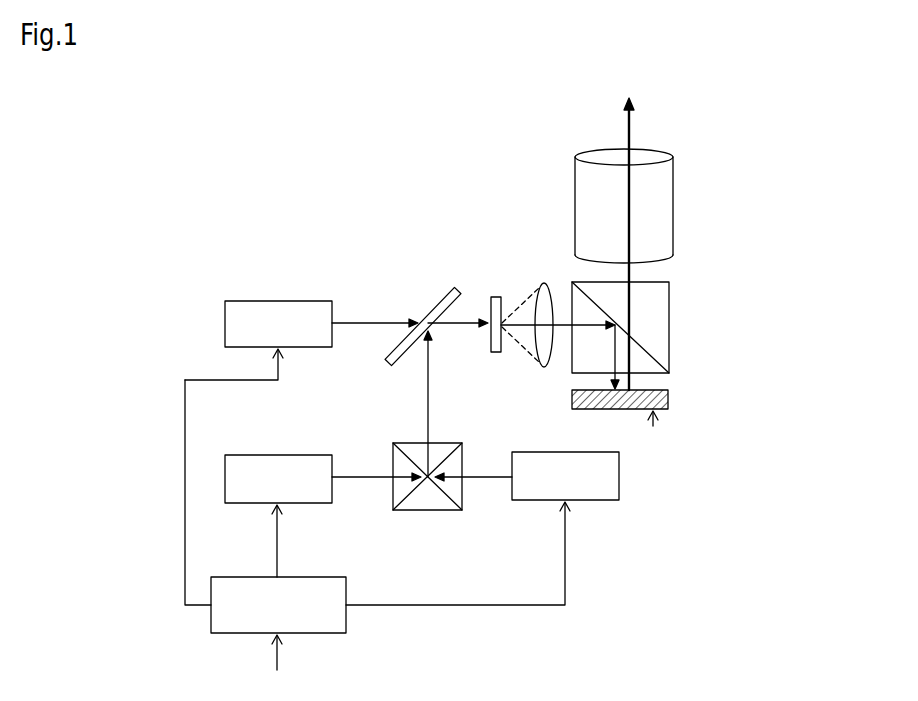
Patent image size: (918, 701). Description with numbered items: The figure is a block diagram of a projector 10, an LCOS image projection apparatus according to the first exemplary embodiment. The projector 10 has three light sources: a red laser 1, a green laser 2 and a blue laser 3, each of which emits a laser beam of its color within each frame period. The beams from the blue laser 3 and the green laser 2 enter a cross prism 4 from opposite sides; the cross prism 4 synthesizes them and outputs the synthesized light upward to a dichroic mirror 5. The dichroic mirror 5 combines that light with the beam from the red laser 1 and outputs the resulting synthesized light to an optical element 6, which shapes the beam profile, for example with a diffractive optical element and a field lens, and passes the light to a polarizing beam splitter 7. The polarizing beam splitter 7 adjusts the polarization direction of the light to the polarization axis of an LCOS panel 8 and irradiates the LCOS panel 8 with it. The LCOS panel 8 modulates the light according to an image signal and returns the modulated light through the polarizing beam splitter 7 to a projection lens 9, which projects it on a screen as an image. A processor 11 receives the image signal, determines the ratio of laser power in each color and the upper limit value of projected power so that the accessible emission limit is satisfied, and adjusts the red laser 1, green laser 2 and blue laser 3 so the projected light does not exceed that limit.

The red laser 1 is at (242, 300).
The green laser 2 is at (594, 502).
The blue laser 3 is at (306, 455).
The cross prism 4 is at (477, 426).
The dichroic mirror 5 is at (430, 307).
The optical element 6 is at (550, 268).
The polarizing beam splitter 7 is at (670, 323).
The LCOS panel 8 is at (670, 398).
The projection lens 9 is at (698, 156).
The projector 10 is at (241, 136).
The processor 11 is at (313, 577).